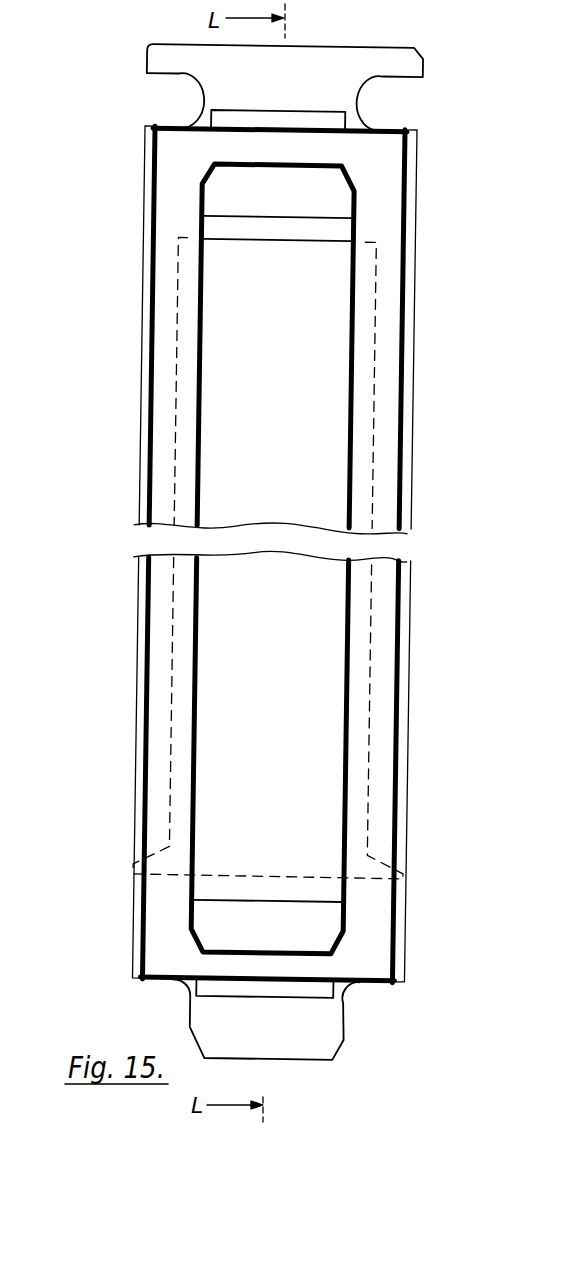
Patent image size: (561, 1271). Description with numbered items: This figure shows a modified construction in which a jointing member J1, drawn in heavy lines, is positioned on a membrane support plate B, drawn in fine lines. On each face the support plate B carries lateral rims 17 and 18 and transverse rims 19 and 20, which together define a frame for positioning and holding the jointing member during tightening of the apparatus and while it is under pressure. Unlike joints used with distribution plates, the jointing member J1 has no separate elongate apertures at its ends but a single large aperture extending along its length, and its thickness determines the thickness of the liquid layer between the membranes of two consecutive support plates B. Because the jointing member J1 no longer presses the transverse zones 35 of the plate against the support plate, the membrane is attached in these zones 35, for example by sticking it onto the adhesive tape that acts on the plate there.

The lateral rim 17 is at (144, 287).
The lateral rim 18 is at (411, 287).
The transverse rim 19 is at (240, 117).
The transverse rim 20 is at (297, 993).
The transverse zone 35 is at (317, 223).
The jointing member J1 is at (163, 707).
The membrane support plate B is at (207, 1017).